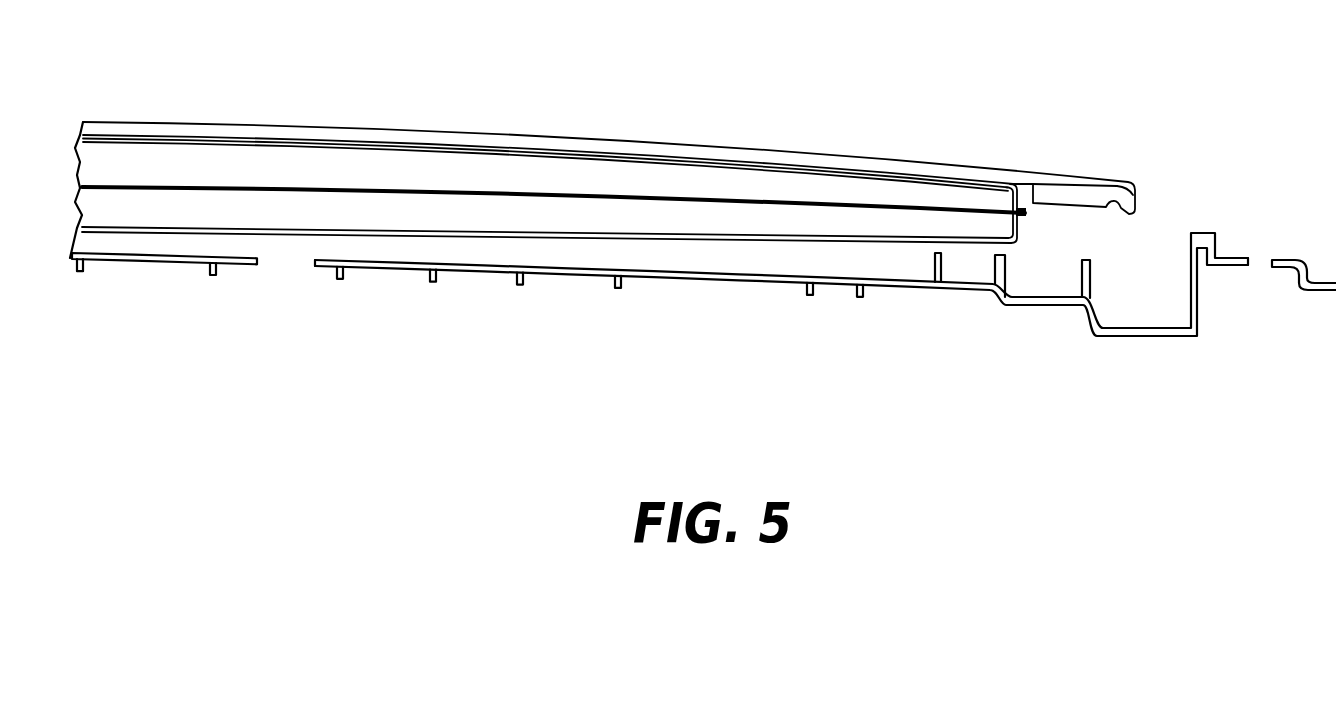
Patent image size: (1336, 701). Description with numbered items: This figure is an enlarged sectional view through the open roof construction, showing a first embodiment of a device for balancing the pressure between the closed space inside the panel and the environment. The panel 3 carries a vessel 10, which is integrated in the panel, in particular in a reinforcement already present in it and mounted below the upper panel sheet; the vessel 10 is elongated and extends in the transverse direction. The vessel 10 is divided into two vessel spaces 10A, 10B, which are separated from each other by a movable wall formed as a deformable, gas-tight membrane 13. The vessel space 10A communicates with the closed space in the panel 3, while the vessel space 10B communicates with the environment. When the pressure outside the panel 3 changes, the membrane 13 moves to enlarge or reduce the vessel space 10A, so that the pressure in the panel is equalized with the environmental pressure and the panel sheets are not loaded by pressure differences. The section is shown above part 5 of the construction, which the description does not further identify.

The panel 3 is at (818, 160).
The housing 5 is at (1167, 336).
The vessel 10 is at (982, 178).
The vessel space 10A is at (440, 167).
The vessel space 10B is at (568, 217).
The deformable membrane 13 is at (275, 187).